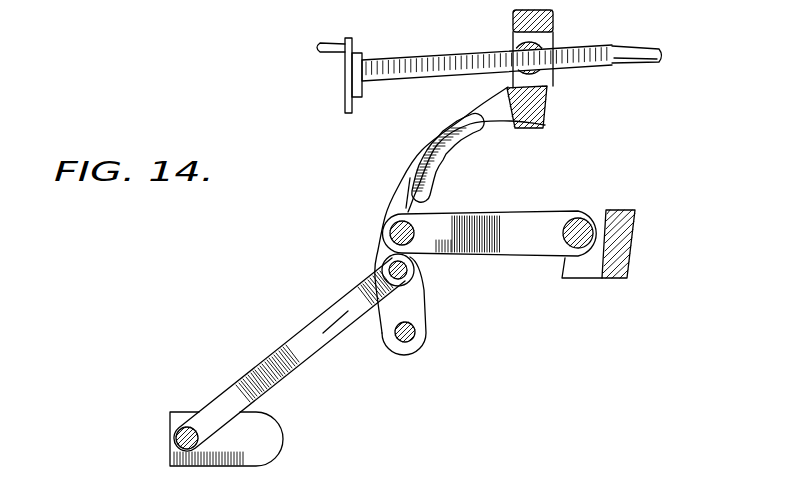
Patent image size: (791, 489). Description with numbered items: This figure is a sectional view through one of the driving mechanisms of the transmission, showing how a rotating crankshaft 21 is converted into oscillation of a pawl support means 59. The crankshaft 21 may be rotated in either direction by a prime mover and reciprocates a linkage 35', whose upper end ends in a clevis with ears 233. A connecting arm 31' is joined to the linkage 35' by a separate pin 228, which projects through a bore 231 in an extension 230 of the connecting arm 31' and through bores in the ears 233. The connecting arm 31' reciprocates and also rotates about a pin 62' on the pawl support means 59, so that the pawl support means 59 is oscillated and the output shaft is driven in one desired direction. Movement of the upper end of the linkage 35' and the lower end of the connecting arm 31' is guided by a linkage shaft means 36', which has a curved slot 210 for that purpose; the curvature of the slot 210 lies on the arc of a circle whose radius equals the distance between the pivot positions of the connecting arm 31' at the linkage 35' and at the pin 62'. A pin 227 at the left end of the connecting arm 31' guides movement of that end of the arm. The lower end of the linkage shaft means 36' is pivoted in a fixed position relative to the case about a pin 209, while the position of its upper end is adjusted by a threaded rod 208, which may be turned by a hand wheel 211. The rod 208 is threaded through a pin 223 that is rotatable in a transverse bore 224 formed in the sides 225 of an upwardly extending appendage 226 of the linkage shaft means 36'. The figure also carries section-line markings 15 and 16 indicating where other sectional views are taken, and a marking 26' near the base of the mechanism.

The threaded rod 208 is at (640, 46).
The hand wheel 211 is at (338, 89).
The upwardly extending appendage 226 is at (533, 37).
The sides 225 is at (537, 35).
The transverse bore 224 is at (527, 44).
The pin 223 is at (535, 92).
The curved slot 210 is at (462, 131).
The linkage shaft means 36' is at (416, 157).
The section line 16- 16 is at (406, 191).
The pin 227 is at (461, 212).
The connecting arm 31' is at (333, 310).
The pin 62' is at (599, 207).
The pawl support means 59 is at (628, 211).
The section line 15- 15 is at (478, 233).
The extension 230 is at (412, 291).
The pin 228 is at (407, 271).
The ears 233 is at (417, 300).
The pin 209 is at (417, 333).
The linkage 35' is at (289, 354).
The bore 231 is at (385, 264).
The crankshaft 21 is at (295, 430).
The bracket base 26' is at (179, 469).